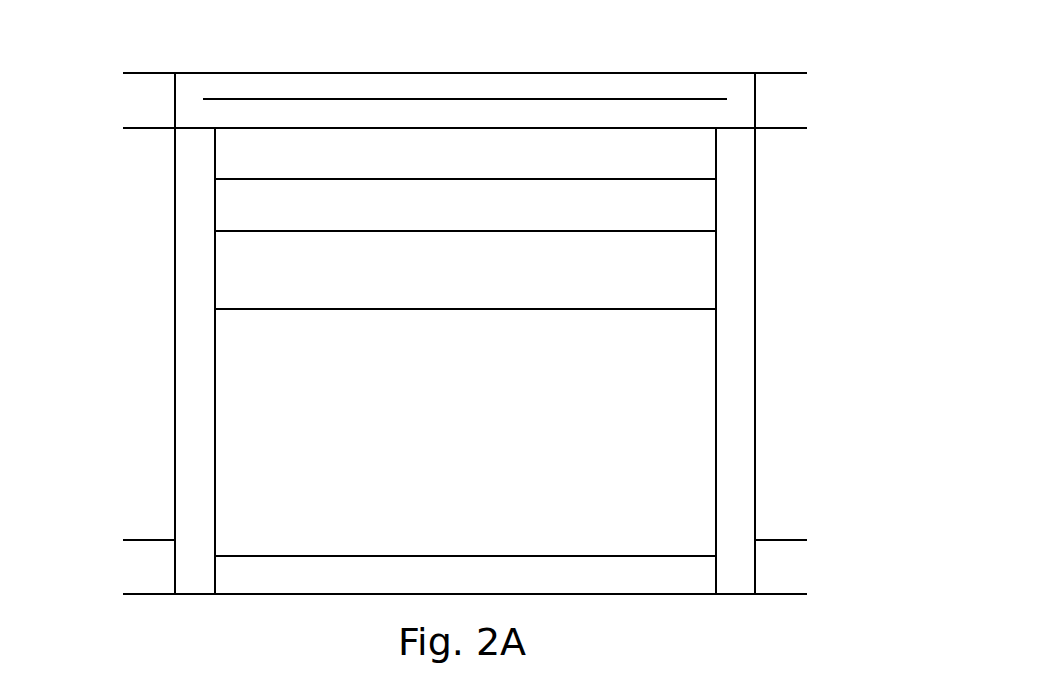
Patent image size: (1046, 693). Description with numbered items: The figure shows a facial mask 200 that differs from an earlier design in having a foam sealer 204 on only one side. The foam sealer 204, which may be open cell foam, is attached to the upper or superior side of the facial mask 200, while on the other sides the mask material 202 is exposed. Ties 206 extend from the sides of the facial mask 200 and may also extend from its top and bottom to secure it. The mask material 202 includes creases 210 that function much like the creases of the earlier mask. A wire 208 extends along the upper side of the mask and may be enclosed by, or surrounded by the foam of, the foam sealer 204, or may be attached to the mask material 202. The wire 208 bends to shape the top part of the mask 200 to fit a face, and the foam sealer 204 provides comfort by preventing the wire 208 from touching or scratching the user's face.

The facial mask 200 is at (150, 357).
The mask material 202 is at (695, 353).
The foam sealer 204 is at (739, 89).
The ties 206 is at (785, 73).
The wire 208 is at (237, 100).
The creases 210 is at (685, 179).